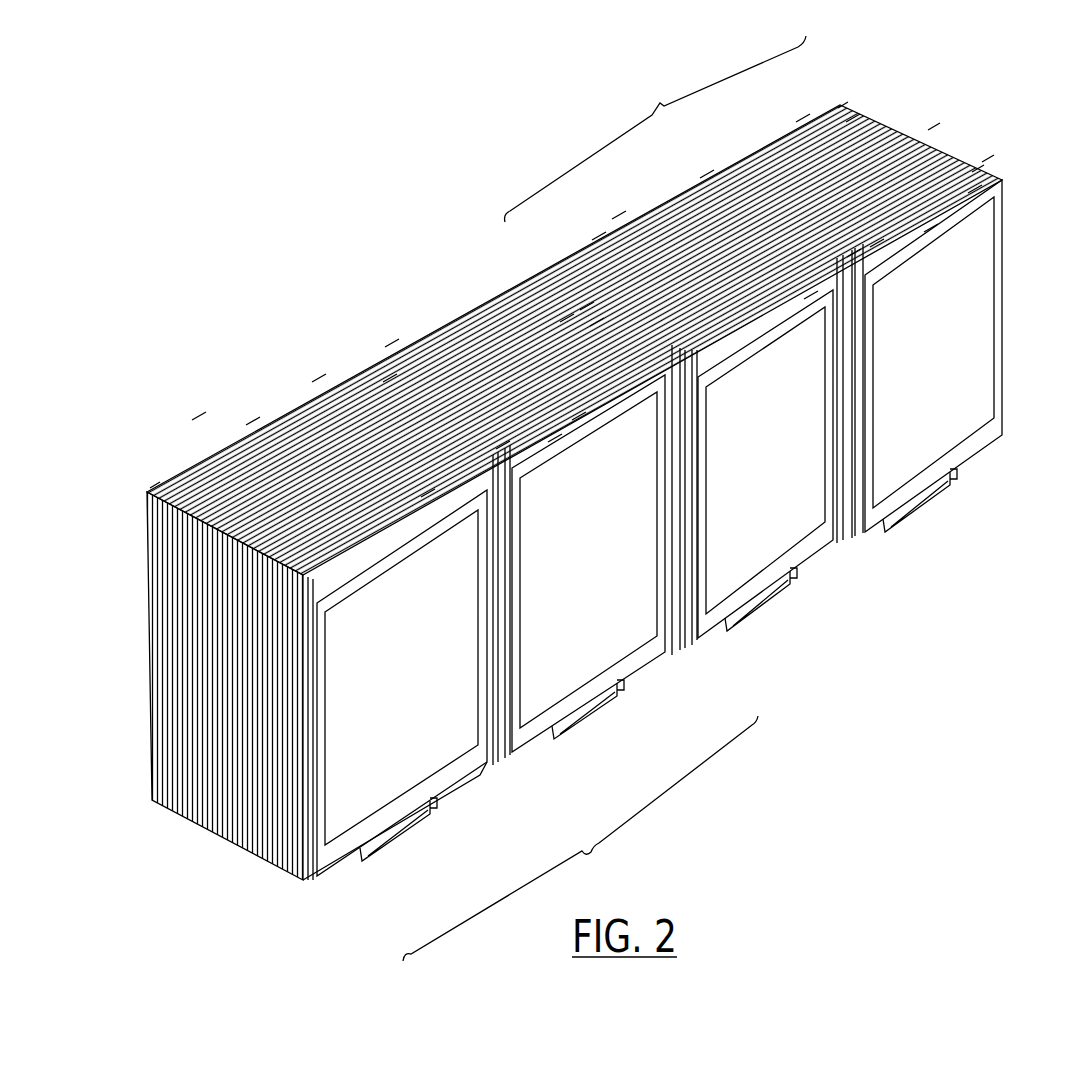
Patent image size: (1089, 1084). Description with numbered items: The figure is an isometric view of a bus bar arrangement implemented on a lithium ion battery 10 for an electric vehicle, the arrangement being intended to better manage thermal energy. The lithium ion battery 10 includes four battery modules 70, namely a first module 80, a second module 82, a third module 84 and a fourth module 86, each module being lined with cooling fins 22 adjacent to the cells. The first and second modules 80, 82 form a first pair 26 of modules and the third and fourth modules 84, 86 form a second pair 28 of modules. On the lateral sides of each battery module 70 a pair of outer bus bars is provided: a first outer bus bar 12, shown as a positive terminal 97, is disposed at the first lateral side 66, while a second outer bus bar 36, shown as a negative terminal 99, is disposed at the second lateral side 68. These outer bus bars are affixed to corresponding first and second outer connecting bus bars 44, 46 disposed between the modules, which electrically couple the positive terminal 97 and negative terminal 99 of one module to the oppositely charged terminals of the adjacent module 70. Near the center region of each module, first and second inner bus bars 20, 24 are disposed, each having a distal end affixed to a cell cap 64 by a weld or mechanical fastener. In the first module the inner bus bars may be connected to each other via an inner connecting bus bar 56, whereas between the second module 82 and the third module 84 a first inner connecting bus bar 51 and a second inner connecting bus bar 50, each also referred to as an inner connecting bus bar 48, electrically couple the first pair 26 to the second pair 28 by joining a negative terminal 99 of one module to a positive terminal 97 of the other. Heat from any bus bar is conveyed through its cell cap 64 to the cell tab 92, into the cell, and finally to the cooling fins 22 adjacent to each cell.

The lithium ion battery 10 is at (482, 262).
The first outer bus bar 12 is at (283, 405).
The first inner bus bar 20 is at (245, 432).
The cooling fin 22 is at (395, 378).
The second inner bus bar 24 is at (198, 418).
The first pair of modules 26 is at (580, 838).
The second pair of modules 28 is at (655, 129).
The second outer bus bar 36 is at (555, 440).
The first outer connecting bus bar 44 is at (318, 380).
The second outer connecting bus bar 46 is at (502, 447).
The inner connecting bus bar 48 is at (587, 307).
The second inner connecting bus bar 50 is at (595, 323).
The first inner connecting bus bar 51 is at (567, 318).
The inner connecting bus bar 56 is at (975, 190).
The cell cap 64 is at (252, 422).
The first lateral side 66 is at (183, 452).
The second lateral side 68 is at (510, 535).
The battery module 70 is at (678, 693).
The first module 80 is at (408, 836).
The second module 82 is at (595, 722).
The third module 84 is at (772, 630).
The fourth module 86 is at (928, 517).
The cell tab 92 is at (802, 120).
The positive terminal 97 is at (678, 504).
The negative terminal 99 is at (392, 345).